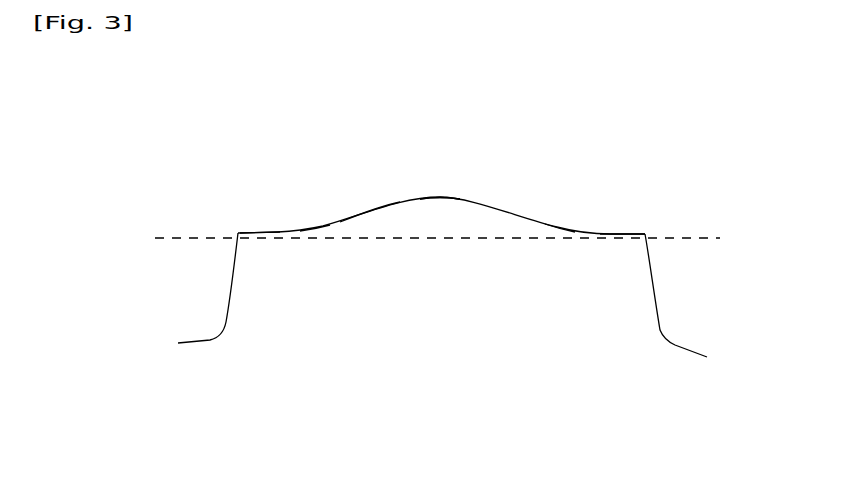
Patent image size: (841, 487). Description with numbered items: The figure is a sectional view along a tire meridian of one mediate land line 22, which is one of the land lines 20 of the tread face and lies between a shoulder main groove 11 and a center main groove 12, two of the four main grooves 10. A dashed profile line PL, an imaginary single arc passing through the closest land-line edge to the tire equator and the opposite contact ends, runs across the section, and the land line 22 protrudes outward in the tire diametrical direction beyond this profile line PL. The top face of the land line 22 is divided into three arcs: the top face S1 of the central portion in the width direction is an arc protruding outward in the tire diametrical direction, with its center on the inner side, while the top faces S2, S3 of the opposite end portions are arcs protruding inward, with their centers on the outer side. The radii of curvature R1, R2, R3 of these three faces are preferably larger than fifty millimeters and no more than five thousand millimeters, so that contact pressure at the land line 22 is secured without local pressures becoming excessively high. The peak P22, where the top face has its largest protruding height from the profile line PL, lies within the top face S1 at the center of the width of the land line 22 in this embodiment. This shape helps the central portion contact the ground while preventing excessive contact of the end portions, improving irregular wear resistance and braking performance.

The profile line PL is at (183, 237).
The mediate land line 22 is at (441, 156).
The land lines 20 is at (497, 207).
The top face of central portion S1 is at (383, 210).
The top face of end portion S2 is at (280, 232).
The top face of end portion S3 is at (610, 233).
The radius of curvature R1 is at (442, 206).
The radius of curvature R2 is at (321, 222).
The radius of curvature R3 is at (561, 222).
The peak P22 is at (432, 197).
The shoulder main groove 11 is at (200, 327).
The center main groove 12 is at (682, 337).
The main grooves 10 is at (437, 336).